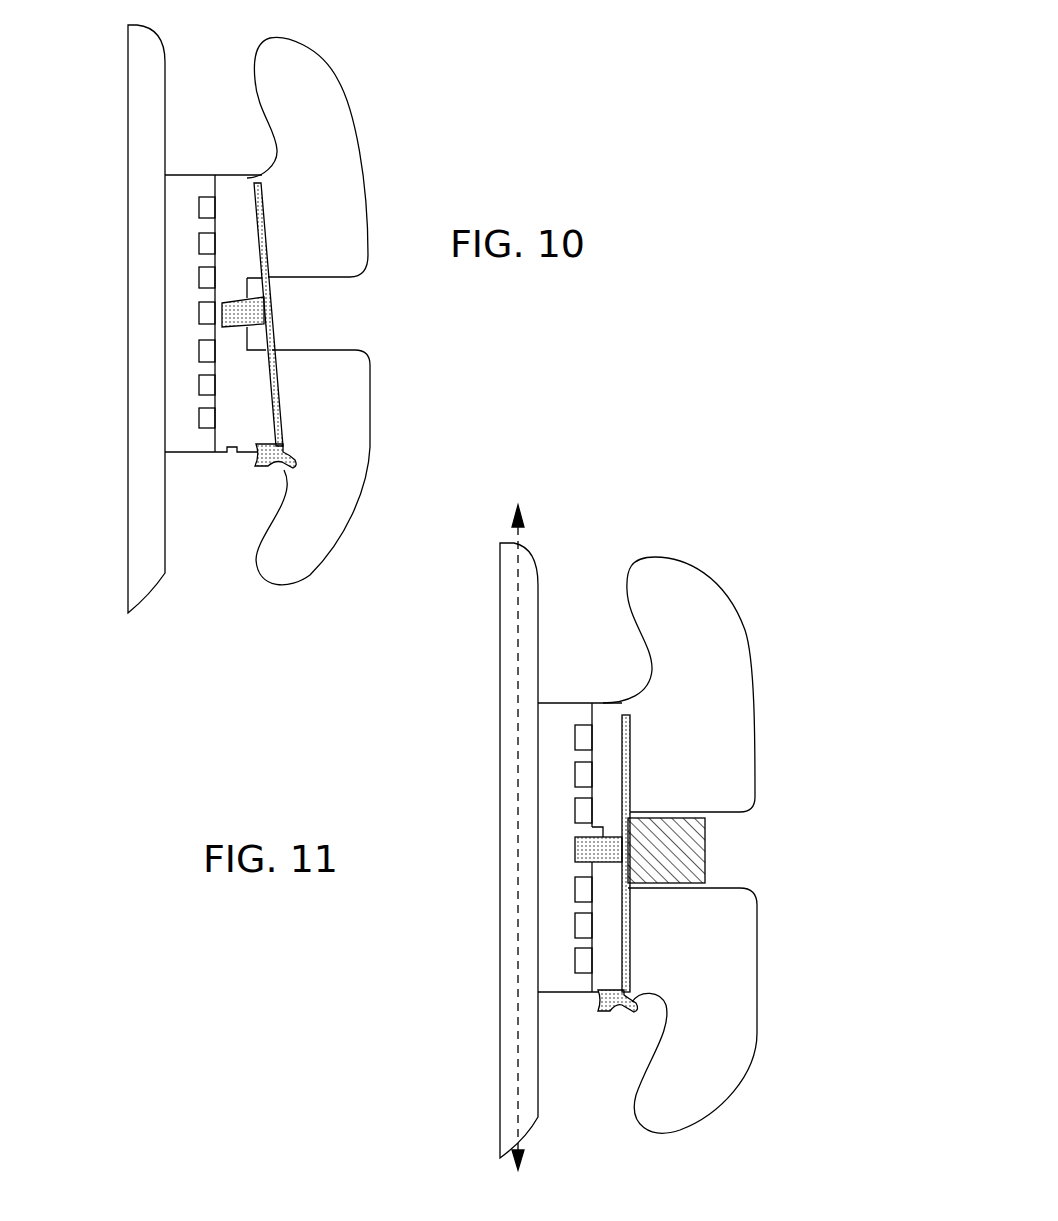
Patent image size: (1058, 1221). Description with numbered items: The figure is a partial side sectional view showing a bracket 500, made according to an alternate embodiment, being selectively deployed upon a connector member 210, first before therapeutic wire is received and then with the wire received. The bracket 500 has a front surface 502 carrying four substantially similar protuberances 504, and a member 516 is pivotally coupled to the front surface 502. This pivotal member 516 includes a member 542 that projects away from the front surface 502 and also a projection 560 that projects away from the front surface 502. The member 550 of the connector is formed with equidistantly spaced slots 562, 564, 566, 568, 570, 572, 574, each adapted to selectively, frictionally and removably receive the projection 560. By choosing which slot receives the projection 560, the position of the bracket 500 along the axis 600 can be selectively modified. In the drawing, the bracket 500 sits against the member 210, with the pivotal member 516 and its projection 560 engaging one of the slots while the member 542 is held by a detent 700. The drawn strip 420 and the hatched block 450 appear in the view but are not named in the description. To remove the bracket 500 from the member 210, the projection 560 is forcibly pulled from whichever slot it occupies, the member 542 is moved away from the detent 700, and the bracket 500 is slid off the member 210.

In FIG. 10, the member 210 is at (138, 88).
In FIG. 11, the member 210 is at (528, 652).
In FIG. 10, the contact strip 420 is at (256, 183).
In FIG. 11, the contact strip 420 is at (622, 716).
In FIG. 11, the hatched block 450 is at (700, 848).
In FIG. 10, the bracket 500 is at (400, 141).
In FIG. 11, the bracket 500 is at (850, 640).
In FIG. 11, the front surface 502 is at (768, 713).
In FIG. 10, the protuberances 504 is at (343, 170).
In FIG. 11, the protuberances 504 is at (719, 670).
In FIG. 11, the member 516 is at (632, 803).
In FIG. 11, the member 542 is at (617, 1013).
In FIG. 10, the member 550 is at (183, 187).
In FIG. 11, the member 550 is at (557, 723).
In FIG. 11, the projection 560 is at (604, 832).
In FIG. 11, the slot 562 is at (585, 742).
In FIG. 11, the slot 564 is at (585, 778).
In FIG. 11, the slot 566 is at (585, 815).
In FIG. 11, the slot 568 is at (570, 848).
In FIG. 11, the slot 570 is at (583, 892).
In FIG. 11, the slot 572 is at (583, 928).
In FIG. 11, the slot 574 is at (582, 963).
In FIG. 11, the axis 600 is at (520, 543).
In FIG. 10, the detent 700 is at (233, 455).